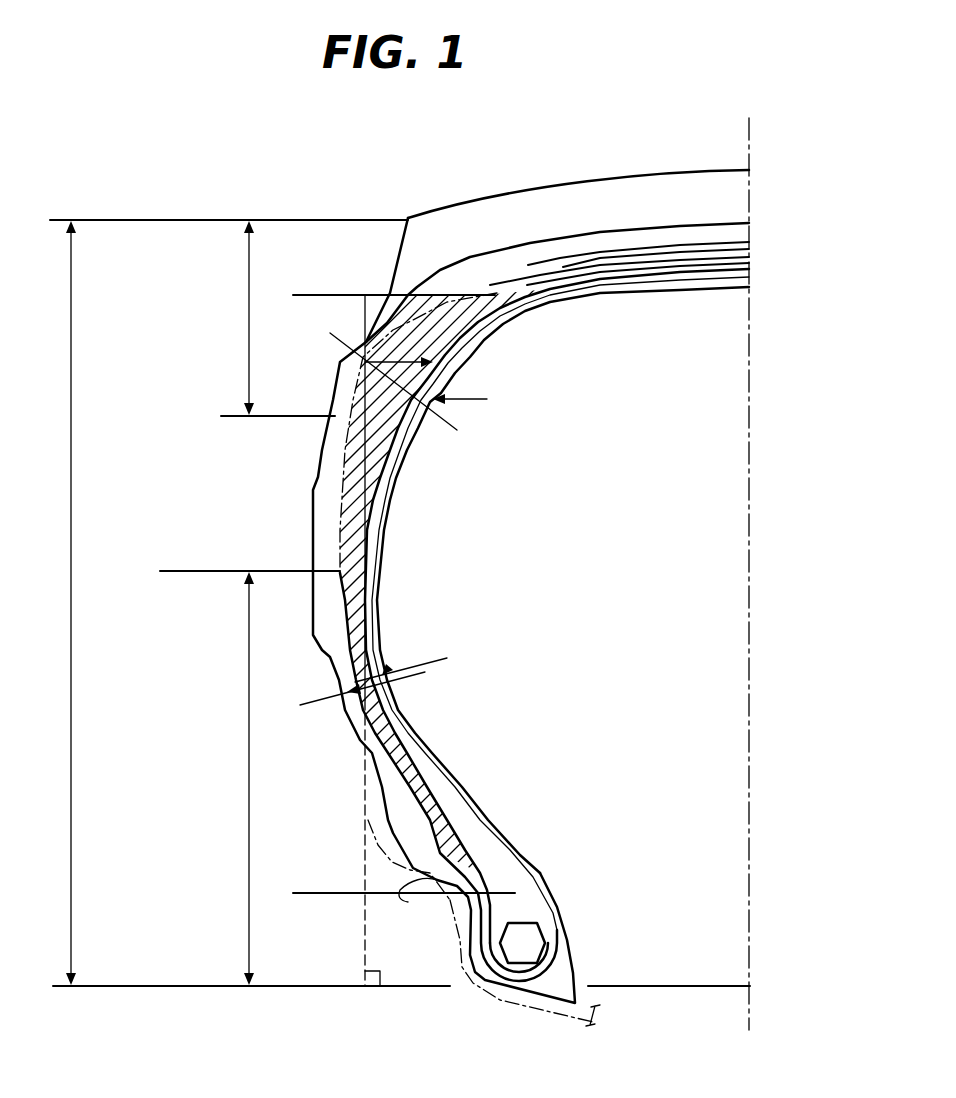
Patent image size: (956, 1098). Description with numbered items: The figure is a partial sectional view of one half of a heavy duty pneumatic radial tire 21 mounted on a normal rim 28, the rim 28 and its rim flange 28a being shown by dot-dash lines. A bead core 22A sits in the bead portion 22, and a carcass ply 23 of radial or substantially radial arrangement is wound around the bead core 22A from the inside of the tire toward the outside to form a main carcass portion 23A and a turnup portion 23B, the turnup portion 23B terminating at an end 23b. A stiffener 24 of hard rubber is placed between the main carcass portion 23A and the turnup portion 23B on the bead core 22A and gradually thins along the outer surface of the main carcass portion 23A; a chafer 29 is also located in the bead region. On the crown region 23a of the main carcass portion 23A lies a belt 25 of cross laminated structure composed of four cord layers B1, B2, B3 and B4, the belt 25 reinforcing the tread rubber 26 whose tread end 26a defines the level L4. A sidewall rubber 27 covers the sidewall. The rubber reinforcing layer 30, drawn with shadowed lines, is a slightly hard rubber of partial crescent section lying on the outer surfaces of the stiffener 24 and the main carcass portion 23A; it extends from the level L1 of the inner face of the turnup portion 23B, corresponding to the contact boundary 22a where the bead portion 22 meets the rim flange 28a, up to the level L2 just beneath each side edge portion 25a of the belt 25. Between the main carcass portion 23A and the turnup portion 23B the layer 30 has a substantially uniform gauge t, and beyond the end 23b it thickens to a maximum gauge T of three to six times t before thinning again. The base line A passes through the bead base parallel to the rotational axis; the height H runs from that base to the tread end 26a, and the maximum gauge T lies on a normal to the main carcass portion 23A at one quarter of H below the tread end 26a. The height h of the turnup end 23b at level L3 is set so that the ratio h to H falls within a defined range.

The tire 21 is at (760, 168).
The bead portion 22 is at (555, 866).
The bead core 22A is at (538, 922).
The contact boundary 22a is at (445, 900).
The carcass ply 23 is at (503, 625).
The main carcass portion 23A is at (375, 660).
The turnup portion 23B is at (345, 650).
The crown region 23a is at (745, 327).
The end of the turnup portion 23b is at (340, 573).
The stiffener 24 is at (503, 847).
The belt 25 is at (656, 273).
The side edge portion of the belt 25a is at (497, 290).
The tread rubber 26 is at (626, 172).
The tread end 26a is at (405, 216).
The sidewall rubber 27 is at (313, 517).
The normal rim 28 is at (557, 1017).
The rim flange 28a is at (368, 820).
The chafer 29 is at (560, 948).
The rubber reinforcing layer 30 is at (372, 462).
The cord layer B1 is at (760, 268).
The cord layer B2 is at (760, 258).
The cord layer B3 is at (760, 250).
The cord layer B4 is at (760, 243).
The maximum gauge T is at (455, 386).
The uniform gauge t is at (395, 672).
The height H is at (59, 603).
The height of the turnup end h is at (239, 778).
The height level L1 is at (312, 892).
The height level L2 is at (312, 293).
The height level L3 is at (185, 570).
The height level L4 is at (137, 218).
The base line A is at (128, 985).